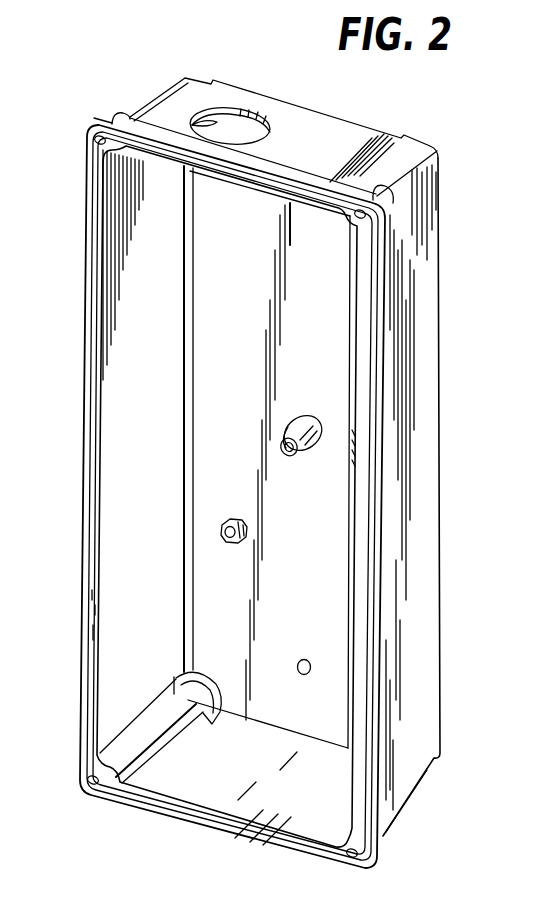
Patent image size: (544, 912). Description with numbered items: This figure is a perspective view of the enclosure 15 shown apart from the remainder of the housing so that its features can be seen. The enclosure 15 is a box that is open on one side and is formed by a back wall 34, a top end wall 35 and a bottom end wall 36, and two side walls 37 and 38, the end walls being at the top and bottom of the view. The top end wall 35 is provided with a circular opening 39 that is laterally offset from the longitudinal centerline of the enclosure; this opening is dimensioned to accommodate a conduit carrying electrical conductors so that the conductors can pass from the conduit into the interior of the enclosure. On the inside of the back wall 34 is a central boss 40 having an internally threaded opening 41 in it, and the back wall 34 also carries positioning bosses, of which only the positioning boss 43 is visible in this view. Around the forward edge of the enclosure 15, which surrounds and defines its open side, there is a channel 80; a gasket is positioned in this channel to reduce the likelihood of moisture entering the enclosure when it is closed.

The enclosure 15 is at (268, 456).
The back wall 34 is at (271, 459).
The top end wall 35 is at (284, 120).
The bottom end wall 36 is at (190, 798).
The side wall 37 is at (126, 328).
The side wall 38 is at (418, 542).
The circular opening 39 is at (254, 108).
The central boss 40 is at (286, 441).
The internally threaded opening 41 is at (287, 458).
The positioning boss 43 is at (247, 532).
The channel 80 is at (92, 483).